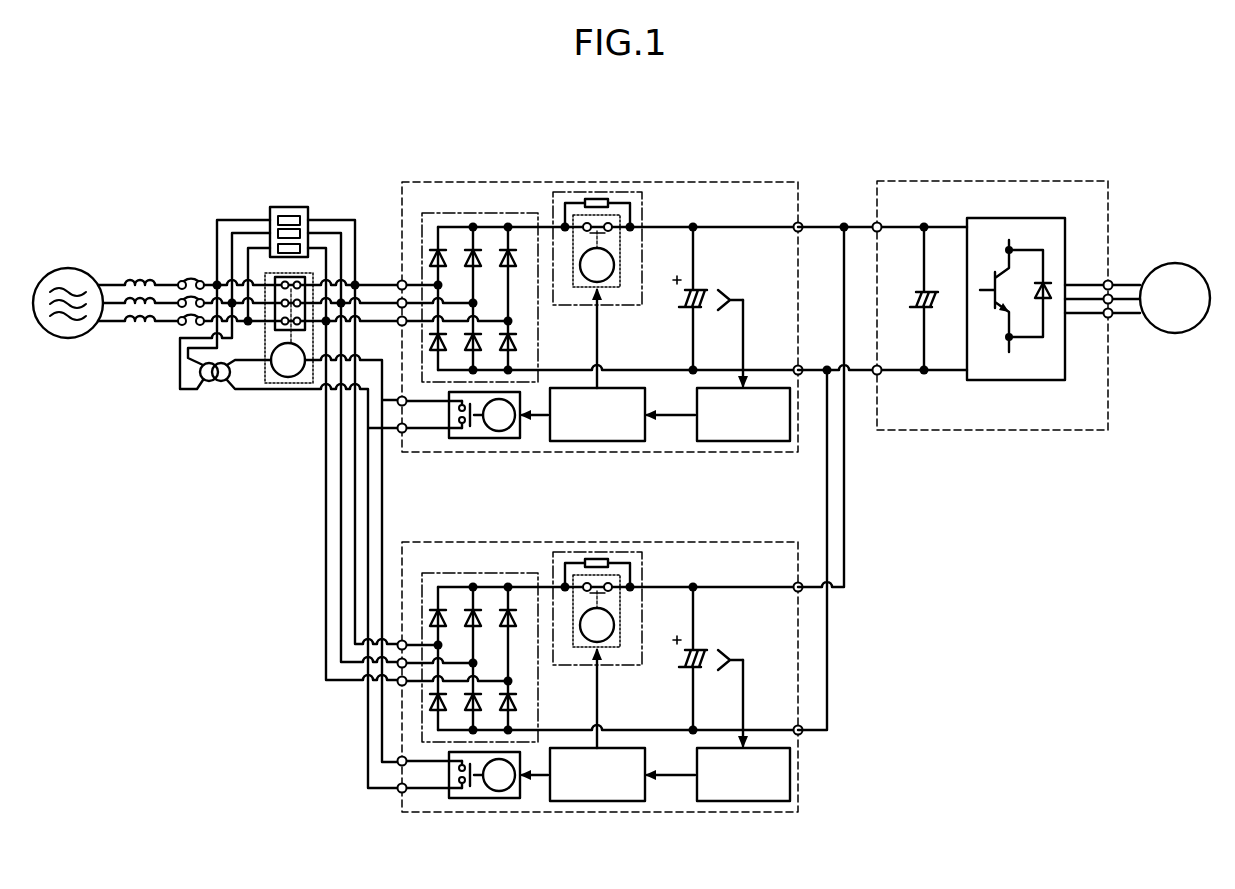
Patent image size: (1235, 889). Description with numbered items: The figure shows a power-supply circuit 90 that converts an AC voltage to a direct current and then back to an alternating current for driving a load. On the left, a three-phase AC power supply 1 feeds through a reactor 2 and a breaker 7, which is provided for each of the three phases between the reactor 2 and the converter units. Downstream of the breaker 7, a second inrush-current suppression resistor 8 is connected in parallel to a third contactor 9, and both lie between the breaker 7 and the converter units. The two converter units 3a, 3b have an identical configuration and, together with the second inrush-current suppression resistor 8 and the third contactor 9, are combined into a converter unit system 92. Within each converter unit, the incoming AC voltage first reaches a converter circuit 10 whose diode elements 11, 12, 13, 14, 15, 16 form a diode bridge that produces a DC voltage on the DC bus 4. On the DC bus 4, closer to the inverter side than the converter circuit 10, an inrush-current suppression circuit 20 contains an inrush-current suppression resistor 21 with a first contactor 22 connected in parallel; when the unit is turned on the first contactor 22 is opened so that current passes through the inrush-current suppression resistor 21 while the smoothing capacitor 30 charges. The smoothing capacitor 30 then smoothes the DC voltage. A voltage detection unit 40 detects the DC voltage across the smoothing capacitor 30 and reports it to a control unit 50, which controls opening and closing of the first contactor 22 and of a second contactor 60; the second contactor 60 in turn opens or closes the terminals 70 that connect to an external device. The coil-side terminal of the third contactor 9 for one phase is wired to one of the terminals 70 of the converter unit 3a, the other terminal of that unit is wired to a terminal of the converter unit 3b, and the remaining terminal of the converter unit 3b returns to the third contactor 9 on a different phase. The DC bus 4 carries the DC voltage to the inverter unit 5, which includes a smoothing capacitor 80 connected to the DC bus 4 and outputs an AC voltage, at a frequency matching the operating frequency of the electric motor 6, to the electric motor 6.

The AC power supply 1 is at (68, 268).
The reactor 2 is at (140, 270).
The converter unit 3a is at (762, 182).
The converter unit 3b is at (762, 542).
The DC bus 4 is at (818, 227).
The inverter unit 5 is at (1027, 181).
The electric motor 6 is at (1176, 263).
The breaker 7 is at (191, 270).
The second inrush-current suppression resistor 8 is at (289, 207).
The third contactor 9 is at (266, 273).
The converter circuit 10 is at (424, 213).
The diode element 11 is at (447, 333).
The diode element 12 is at (446, 256).
The diode element 13 is at (481, 333).
The diode element 14 is at (481, 256).
The diode element 15 is at (516, 333).
The diode element 16 is at (516, 256).
The inrush-current suppression circuit 20 is at (565, 192).
The inrush-current suppression resistor 21 is at (597, 199).
The first contactor 22 is at (612, 215).
The smoothing capacitor 30 is at (703, 290).
The voltage detection unit 40 is at (743, 441).
The control unit 50 is at (597, 441).
The second contactor 60 is at (484, 441).
The terminals 70 is at (400, 436).
The smoothing capacitor 80 is at (930, 290).
The power-supply circuit 90 is at (172, 171).
The converter unit system 92 is at (372, 160).